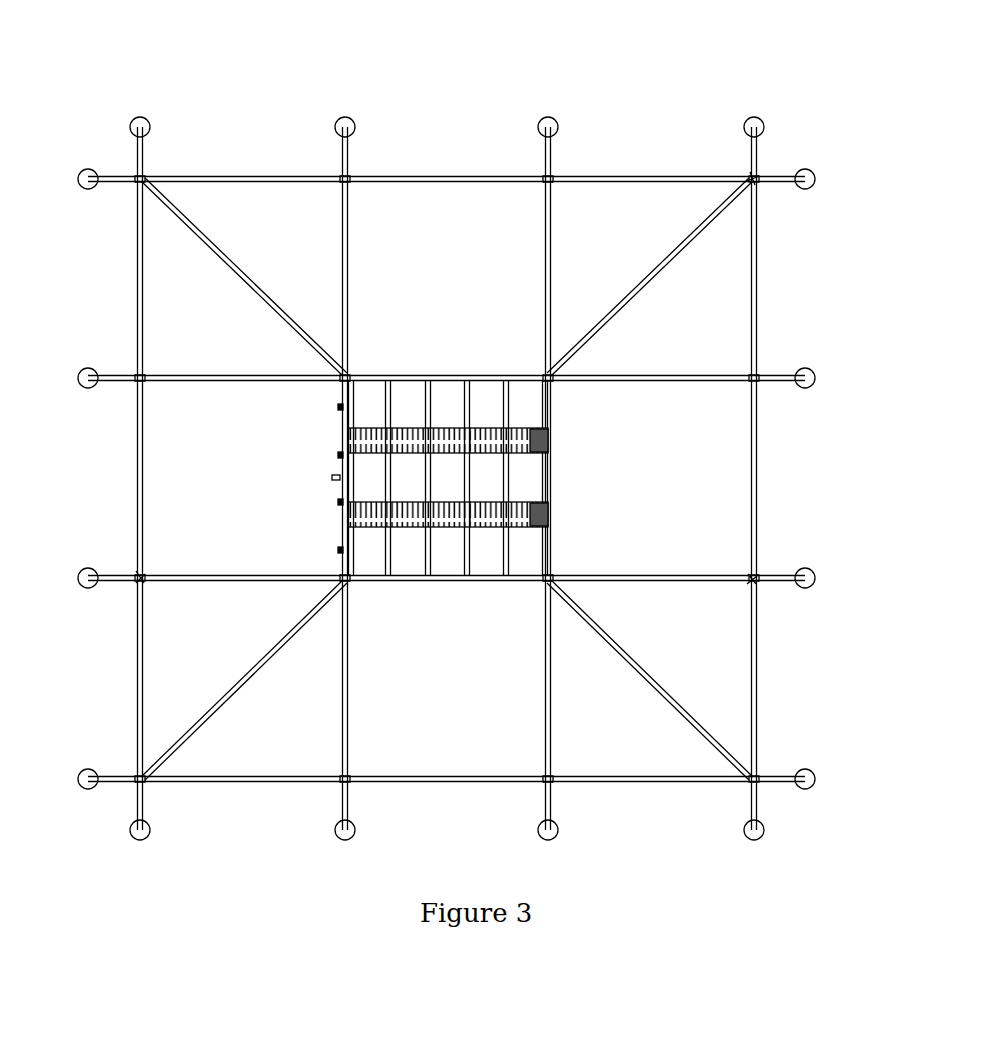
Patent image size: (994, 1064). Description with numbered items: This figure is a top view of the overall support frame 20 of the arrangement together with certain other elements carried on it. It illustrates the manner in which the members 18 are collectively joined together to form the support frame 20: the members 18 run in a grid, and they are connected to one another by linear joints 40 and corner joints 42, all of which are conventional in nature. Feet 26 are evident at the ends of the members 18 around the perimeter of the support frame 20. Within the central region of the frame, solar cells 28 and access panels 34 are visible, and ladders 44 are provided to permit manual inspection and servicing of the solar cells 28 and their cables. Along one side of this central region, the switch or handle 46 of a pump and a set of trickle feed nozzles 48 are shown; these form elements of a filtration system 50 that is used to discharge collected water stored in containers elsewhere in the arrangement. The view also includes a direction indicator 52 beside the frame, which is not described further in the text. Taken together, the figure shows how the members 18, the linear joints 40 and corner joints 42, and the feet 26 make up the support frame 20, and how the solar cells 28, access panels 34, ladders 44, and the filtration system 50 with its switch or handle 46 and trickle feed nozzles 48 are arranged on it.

The members 18 is at (203, 172).
The support frame 20 is at (449, 118).
The feet 26 is at (560, 120).
The solar cells 28 is at (522, 380).
The access panels 34 is at (480, 517).
The linear joints 40 is at (651, 278).
The corner joints 42 is at (755, 177).
The ladders 44 is at (548, 441).
The switch or handle 46 is at (332, 477).
The trickle feed nozzles 48 is at (337, 455).
The filtration system 50 is at (313, 490).
The direction indicator 52 is at (626, 907).